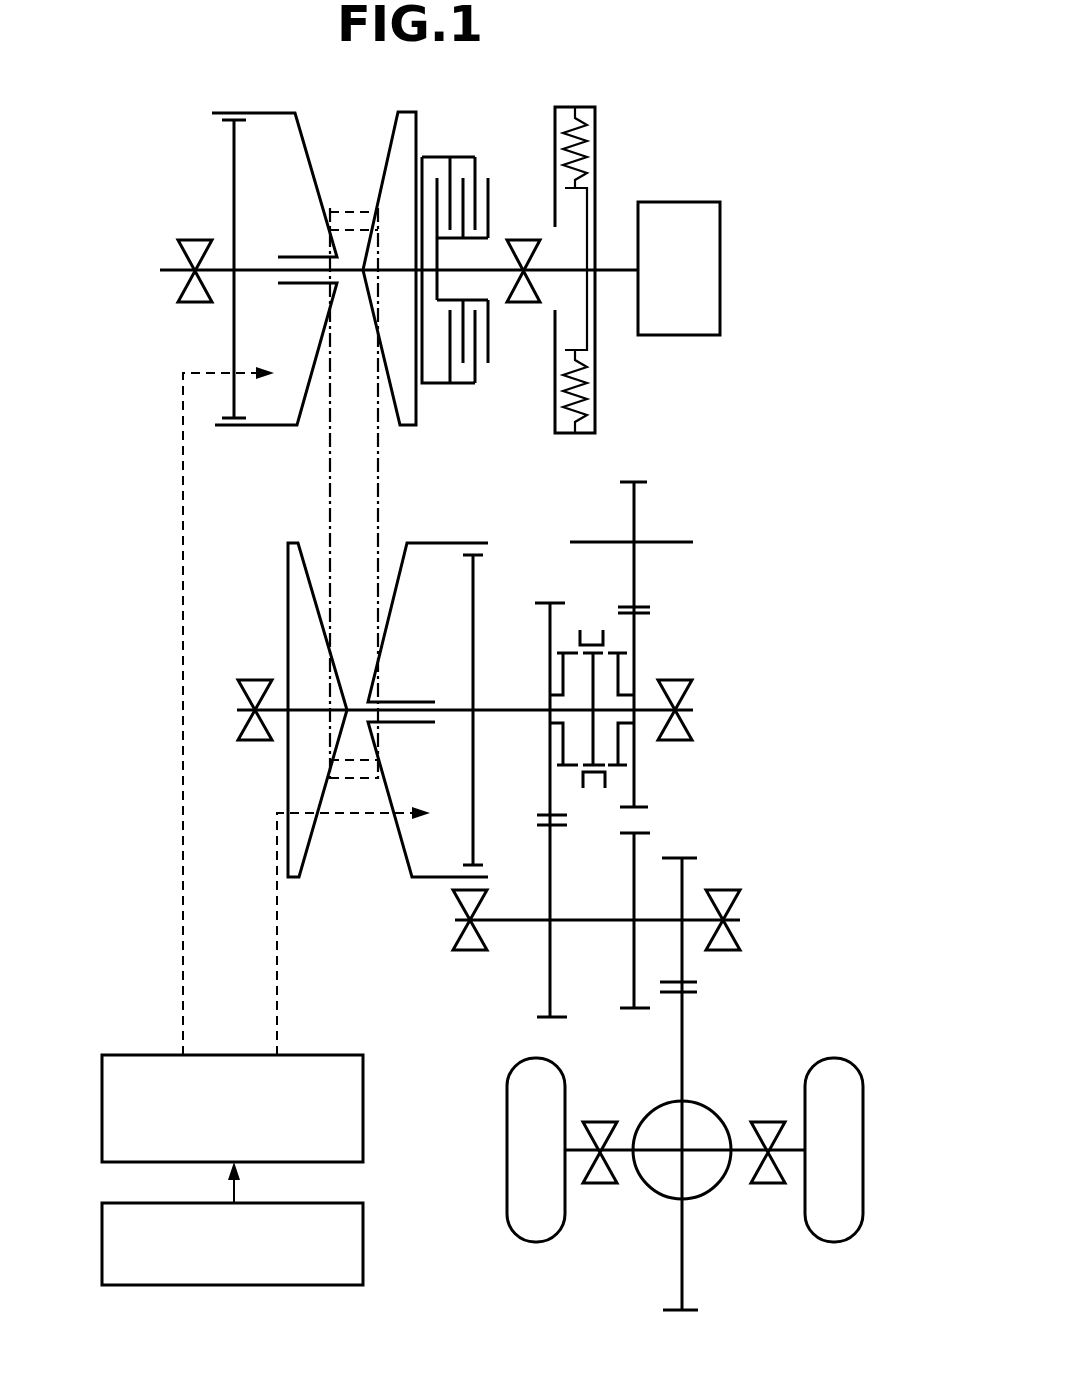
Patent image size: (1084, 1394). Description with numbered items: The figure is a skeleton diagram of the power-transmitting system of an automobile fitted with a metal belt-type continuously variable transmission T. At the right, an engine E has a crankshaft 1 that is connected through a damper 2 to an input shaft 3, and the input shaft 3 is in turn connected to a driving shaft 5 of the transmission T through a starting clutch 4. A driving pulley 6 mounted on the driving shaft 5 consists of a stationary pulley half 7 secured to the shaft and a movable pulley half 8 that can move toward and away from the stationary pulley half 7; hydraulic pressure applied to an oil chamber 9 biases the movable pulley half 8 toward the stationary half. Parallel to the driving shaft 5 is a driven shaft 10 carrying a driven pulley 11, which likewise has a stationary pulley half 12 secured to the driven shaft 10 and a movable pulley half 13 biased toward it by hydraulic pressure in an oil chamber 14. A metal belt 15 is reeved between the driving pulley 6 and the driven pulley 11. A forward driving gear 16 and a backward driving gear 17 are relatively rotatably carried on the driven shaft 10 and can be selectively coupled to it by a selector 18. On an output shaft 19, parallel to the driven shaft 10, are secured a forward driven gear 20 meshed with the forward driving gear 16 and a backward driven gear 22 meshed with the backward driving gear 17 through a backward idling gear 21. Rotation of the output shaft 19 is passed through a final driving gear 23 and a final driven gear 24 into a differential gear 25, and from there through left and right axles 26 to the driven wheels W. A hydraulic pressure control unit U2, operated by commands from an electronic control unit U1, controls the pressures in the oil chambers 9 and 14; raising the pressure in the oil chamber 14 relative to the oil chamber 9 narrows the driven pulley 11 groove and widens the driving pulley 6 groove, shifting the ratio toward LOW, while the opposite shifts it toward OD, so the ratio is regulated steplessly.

The crankshaft 1 is at (614, 274).
The damper 2 is at (604, 155).
The input shaft 3 is at (546, 268).
The starting clutch 4 is at (456, 157).
The driving shaft 5 is at (252, 262).
The driving pulley 6 is at (299, 558).
The stationary pulley half 7 is at (400, 150).
The movable pulley half 8 is at (300, 150).
The oil chamber 9 is at (272, 345).
The driven shaft 10 is at (528, 706).
The driven pulley 11 is at (357, 799).
The stationary pulley half 12 is at (287, 588).
The movable pulley half 13 is at (410, 585).
The oil chamber 14 is at (433, 799).
The metal belt 15 is at (380, 496).
The forward driving gear 16 is at (542, 603).
The backward driving gear 17 is at (650, 615).
The selector 18 is at (594, 790).
The output shaft 19 is at (578, 918).
The forward driven gear 20 is at (562, 1022).
The backward idling gear 21 is at (645, 482).
The backward driven gear 22 is at (633, 1012).
The final driving gear 23 is at (688, 856).
The final driven gear 24 is at (695, 990).
The differential gear 25 is at (712, 1105).
The axle 26 is at (742, 1152).
The engine E is at (672, 282).
The metal belt-type continuously variable transmission T is at (279, 477).
The driven wheel W is at (882, 1250).
The electronic control unit U1 is at (363, 1223).
The hydraulic pressure control unit U2 is at (363, 1081).